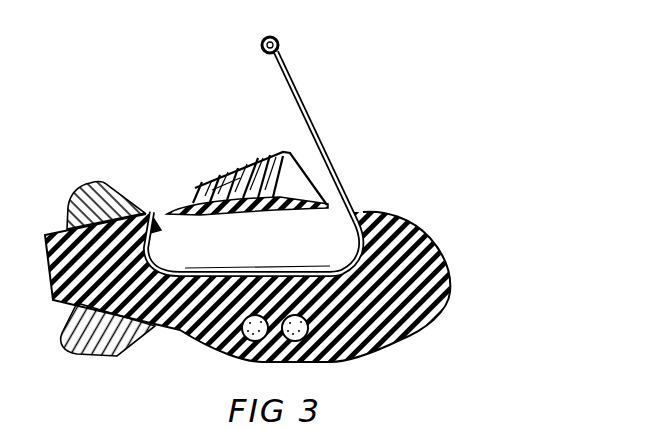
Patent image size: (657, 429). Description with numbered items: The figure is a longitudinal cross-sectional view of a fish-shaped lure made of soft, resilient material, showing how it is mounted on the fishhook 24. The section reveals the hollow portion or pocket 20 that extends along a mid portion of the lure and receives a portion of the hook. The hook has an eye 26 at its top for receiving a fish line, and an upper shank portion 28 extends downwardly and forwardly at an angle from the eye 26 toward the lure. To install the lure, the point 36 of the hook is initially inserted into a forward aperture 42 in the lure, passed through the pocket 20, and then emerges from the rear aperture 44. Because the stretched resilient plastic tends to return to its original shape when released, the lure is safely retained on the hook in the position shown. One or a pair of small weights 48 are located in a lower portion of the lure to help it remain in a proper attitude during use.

The hollow portion or pocket 20 is at (247, 273).
The fishhook 24 is at (265, 152).
The eye 26 is at (279, 45).
The upper shank portion 28 is at (313, 122).
The point 36 is at (167, 207).
The forward aperture 42 is at (364, 220).
The rear aperture 44 is at (173, 208).
The small weights 48 is at (236, 357).